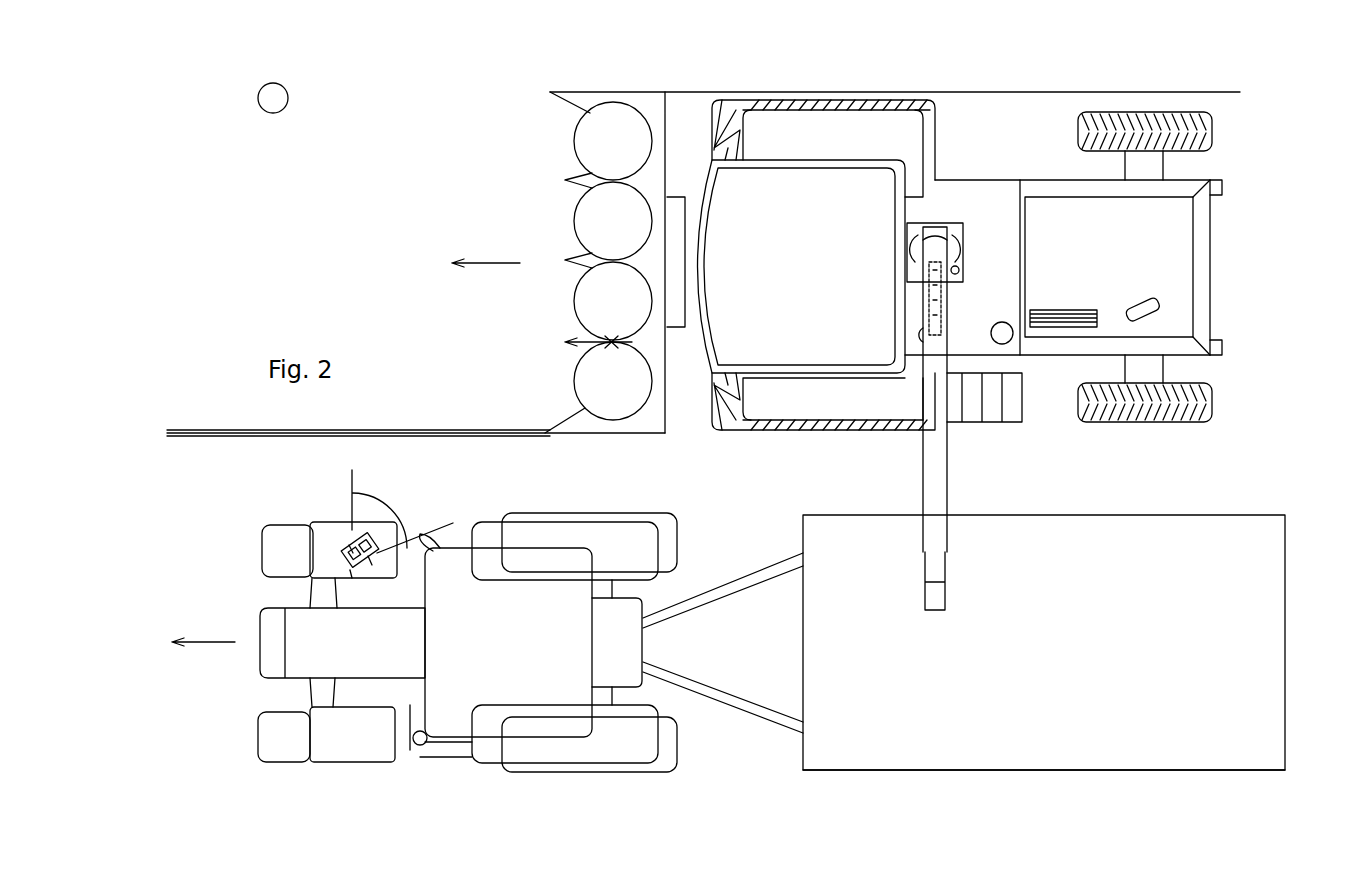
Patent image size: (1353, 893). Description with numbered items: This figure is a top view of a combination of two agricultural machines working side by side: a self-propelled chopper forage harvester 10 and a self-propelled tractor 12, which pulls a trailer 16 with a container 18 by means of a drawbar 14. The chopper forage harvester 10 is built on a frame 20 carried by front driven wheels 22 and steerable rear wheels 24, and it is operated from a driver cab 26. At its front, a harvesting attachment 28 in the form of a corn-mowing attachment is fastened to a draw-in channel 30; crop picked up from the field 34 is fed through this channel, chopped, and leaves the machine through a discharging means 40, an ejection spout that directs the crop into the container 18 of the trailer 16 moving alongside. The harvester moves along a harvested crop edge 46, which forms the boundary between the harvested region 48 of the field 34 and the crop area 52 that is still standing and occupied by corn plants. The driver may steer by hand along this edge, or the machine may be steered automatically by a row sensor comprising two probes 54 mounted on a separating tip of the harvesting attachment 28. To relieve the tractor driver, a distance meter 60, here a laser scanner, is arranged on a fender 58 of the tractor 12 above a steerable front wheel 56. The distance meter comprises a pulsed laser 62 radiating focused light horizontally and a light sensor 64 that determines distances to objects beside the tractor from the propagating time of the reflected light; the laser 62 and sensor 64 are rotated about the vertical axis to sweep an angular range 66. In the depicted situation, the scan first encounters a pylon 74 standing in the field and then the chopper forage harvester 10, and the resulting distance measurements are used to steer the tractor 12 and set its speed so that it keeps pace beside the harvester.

The self-propelled chopper forage harvester 10 is at (888, 344).
The self-propelled tractor 12 is at (489, 640).
The drawbar 14 is at (727, 700).
The trailer 16 is at (975, 789).
The container 18 is at (1083, 664).
The frame 20 is at (990, 190).
The front driven wheels 22 is at (736, 425).
The steerable rear wheels 24 is at (1208, 140).
The driver cab 26 is at (803, 226).
The harvesting attachment 28 is at (648, 103).
The draw-in channel 30 is at (667, 753).
The field 34 is at (358, 352).
The discharging means 40 is at (935, 478).
The harvested crop edge 46 is at (512, 432).
The harvested region 48 is at (201, 516).
The crop area 52 is at (358, 355).
The probes 54 is at (560, 343).
The steerable front wheel 56 is at (283, 540).
The fender 58 is at (388, 560).
The distance meter 60 is at (350, 578).
The pulsed laser 62 is at (351, 557).
The light sensor 64 is at (372, 565).
The angular range 66 is at (386, 493).
The pylon 74 is at (282, 98).